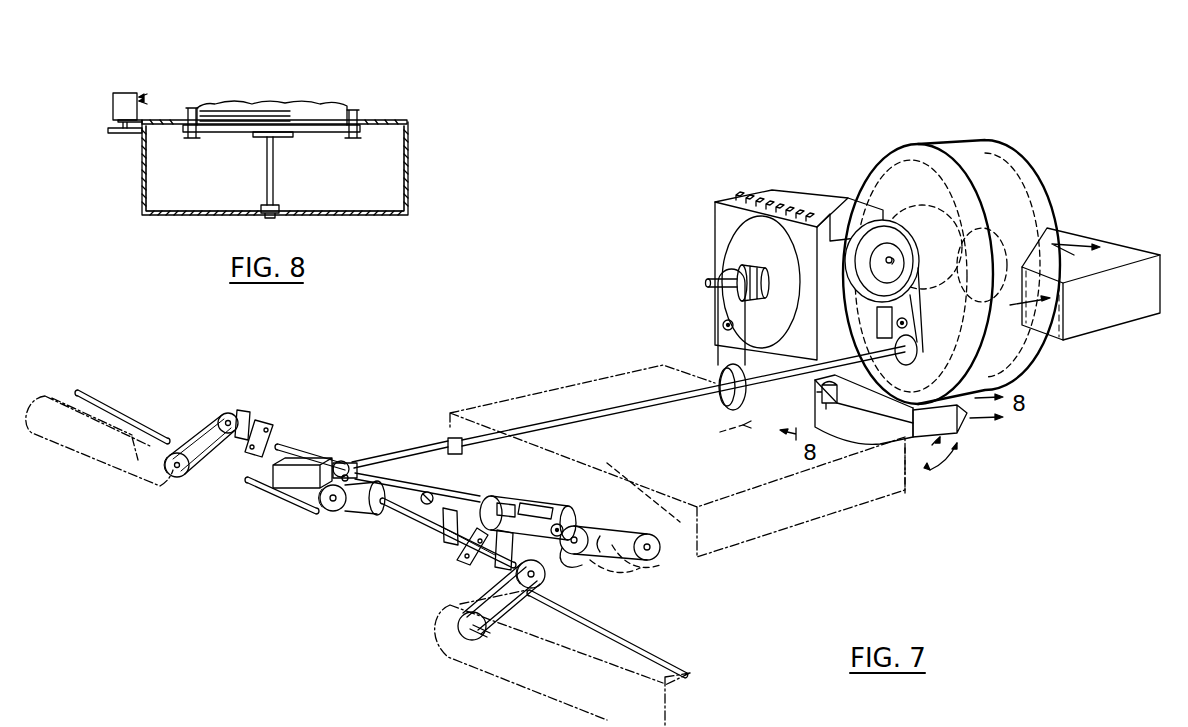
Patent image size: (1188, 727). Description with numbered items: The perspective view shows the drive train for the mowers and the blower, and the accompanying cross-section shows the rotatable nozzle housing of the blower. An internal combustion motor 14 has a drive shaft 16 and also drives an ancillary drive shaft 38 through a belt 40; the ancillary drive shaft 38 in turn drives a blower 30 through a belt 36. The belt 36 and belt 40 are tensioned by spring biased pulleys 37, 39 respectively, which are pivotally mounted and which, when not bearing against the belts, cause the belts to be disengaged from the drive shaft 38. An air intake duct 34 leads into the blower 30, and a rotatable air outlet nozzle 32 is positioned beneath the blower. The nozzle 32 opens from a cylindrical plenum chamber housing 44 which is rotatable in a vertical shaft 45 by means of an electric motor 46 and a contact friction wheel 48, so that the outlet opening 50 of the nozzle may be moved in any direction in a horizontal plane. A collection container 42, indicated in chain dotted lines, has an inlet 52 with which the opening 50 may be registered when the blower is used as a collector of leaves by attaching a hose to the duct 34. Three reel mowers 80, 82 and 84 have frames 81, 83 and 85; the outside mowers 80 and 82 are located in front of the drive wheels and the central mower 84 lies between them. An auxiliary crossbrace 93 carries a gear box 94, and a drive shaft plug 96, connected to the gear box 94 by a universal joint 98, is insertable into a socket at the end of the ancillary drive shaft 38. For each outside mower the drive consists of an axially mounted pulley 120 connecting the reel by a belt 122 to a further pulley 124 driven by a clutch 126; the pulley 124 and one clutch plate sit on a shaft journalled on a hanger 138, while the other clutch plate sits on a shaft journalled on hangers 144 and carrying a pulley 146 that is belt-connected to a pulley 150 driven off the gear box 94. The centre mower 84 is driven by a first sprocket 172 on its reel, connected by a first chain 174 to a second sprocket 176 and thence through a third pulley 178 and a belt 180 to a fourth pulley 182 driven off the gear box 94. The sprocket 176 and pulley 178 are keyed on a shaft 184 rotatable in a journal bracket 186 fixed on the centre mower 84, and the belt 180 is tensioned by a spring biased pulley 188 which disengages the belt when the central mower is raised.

In FIG. 7, the internal combustion motor 14 is at (780, 195).
In FIG. 7, the drive shaft 16 is at (712, 280).
In FIG. 8, the blower 30 is at (300, 118).
In FIG. 7, the blower 30 is at (1012, 176).
In FIG. 8, the rotatable air outlet nozzle 32 is at (140, 186).
In FIG. 7, the rotatable air outlet nozzle 32 is at (931, 465).
In FIG. 7, the air intake duct 34 is at (1117, 305).
In FIG. 7, the belt 36 is at (922, 306).
In FIG. 7, the spring biased pulley 37 is at (722, 325).
In FIG. 7, the ancillary drive shaft 38 is at (651, 405).
In FIG. 7, the spring biased pulley 39 is at (877, 322).
In FIG. 7, the belt 40 is at (714, 343).
In FIG. 7, the collection container 42 is at (805, 532).
In FIG. 8, the cylindrical plenum chamber housing 44 is at (410, 168).
In FIG. 7, the cylindrical plenum chamber housing 44 is at (887, 423).
In FIG. 8, the vertical shaft 45 is at (274, 180).
In FIG. 8, the electric motor 46 is at (113, 105).
In FIG. 7, the electric motor 46 is at (817, 392).
In FIG. 8, the contact friction wheel 48 is at (114, 135).
In FIG. 7, the outlet opening 50 is at (967, 424).
In FIG. 7, the inlet 52 is at (724, 432).
In FIG. 7, the reel mower 80 is at (70, 445).
In FIG. 7, the frame 81 is at (90, 392).
In FIG. 7, the reel mower 82 is at (516, 680).
In FIG. 7, the frame 83 is at (603, 653).
In FIG. 7, the central reel mower 84 is at (638, 575).
In FIG. 7, the frame 85 is at (630, 507).
In FIG. 7, the auxiliary crossbrace 93 is at (268, 493).
In FIG. 7, the gear box 94 is at (310, 470).
In FIG. 7, the drive shaft plug 96 is at (397, 453).
In FIG. 7, the universal joint 98 is at (346, 461).
In FIG. 7, the pulley 120 is at (172, 478).
In FIG. 7, the belt 122 is at (200, 430).
In FIG. 7, the pulley 124 is at (227, 413).
In FIG. 7, the clutch 126 is at (271, 414).
In FIG. 7, the hanger 138 is at (243, 410).
In FIG. 7, the hangers 144 is at (448, 532).
In FIG. 7, the pulley 146 is at (375, 515).
In FIG. 7, the pulley 150 is at (273, 466).
In FIG. 7, the first sprocket 172 is at (660, 550).
In FIG. 7, the first chain 174 is at (625, 576).
In FIG. 7, the second sprocket 176 is at (583, 556).
In FIG. 7, the third pulley 178 is at (520, 496).
In FIG. 7, the belt 180 is at (388, 507).
In FIG. 7, the fourth pulley 182 is at (325, 510).
In FIG. 7, the shaft 184 is at (553, 545).
In FIG. 7, the journal bracket 186 is at (550, 508).
In FIG. 7, the spring biased pulley 188 is at (421, 493).